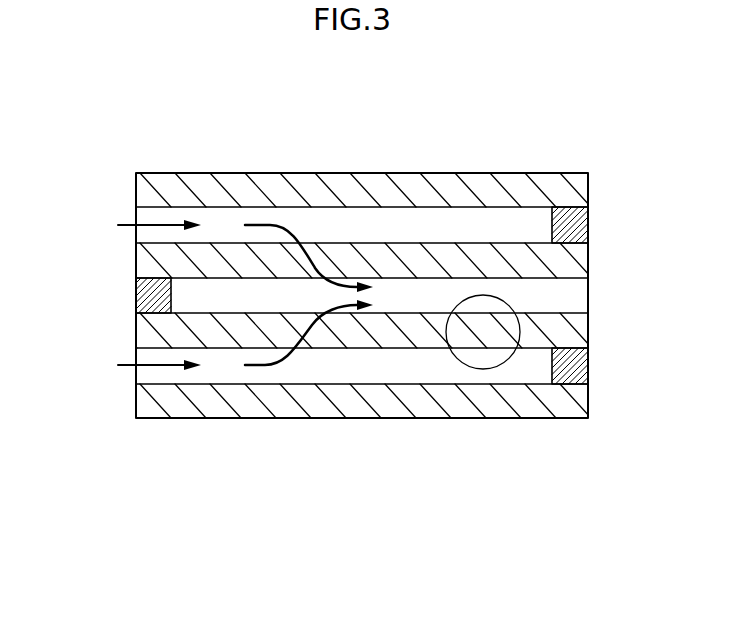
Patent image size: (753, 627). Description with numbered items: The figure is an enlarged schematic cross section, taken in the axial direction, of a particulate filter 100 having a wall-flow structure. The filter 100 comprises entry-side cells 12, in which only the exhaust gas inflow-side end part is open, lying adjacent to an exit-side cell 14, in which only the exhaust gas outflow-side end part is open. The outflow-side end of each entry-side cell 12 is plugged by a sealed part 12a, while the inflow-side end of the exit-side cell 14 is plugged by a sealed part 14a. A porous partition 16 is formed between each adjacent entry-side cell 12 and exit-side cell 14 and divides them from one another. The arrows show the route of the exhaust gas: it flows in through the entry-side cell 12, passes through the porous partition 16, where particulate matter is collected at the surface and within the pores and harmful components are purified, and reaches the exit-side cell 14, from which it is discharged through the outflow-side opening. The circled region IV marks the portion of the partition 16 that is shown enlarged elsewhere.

The particulate filter 100 is at (544, 137).
The entry-side cell 12 is at (447, 222).
The sealed part 12a is at (590, 222).
The exit-side cell 14 is at (568, 300).
The sealed part 14a is at (135, 291).
The partition 16 is at (333, 241).
The enlarged portion shown in FIG. 4 IV is at (508, 366).